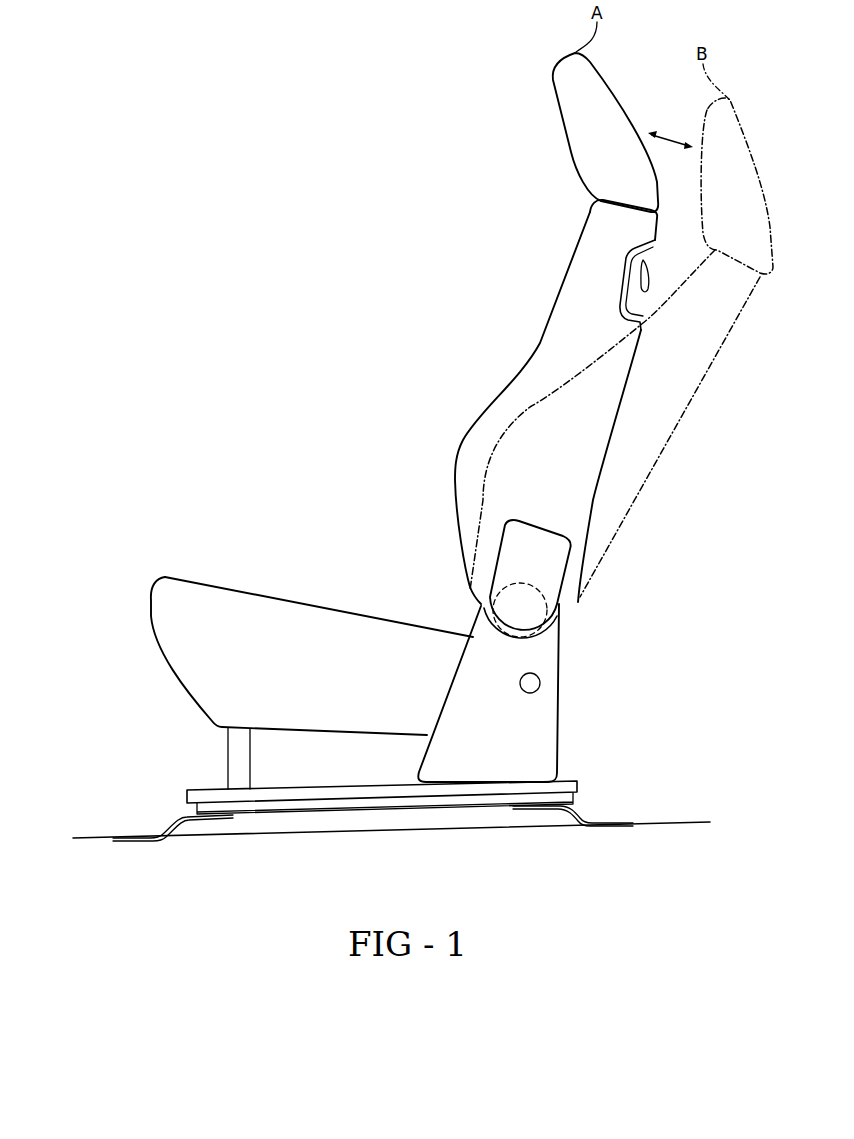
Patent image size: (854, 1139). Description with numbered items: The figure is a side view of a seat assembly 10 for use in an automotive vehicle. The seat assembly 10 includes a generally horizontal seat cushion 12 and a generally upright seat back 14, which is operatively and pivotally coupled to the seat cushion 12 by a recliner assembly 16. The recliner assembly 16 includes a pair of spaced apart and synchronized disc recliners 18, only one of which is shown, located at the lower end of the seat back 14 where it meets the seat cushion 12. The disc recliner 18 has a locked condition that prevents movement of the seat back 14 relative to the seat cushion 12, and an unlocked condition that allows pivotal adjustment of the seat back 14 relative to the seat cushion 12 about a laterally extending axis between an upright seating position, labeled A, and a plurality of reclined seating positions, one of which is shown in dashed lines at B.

The seat assembly 10 is at (434, 165).
The seat cushion 12 is at (255, 588).
The seat back 14 is at (583, 230).
The recliner assembly 16 is at (550, 598).
The disc recliner 18 is at (490, 597).